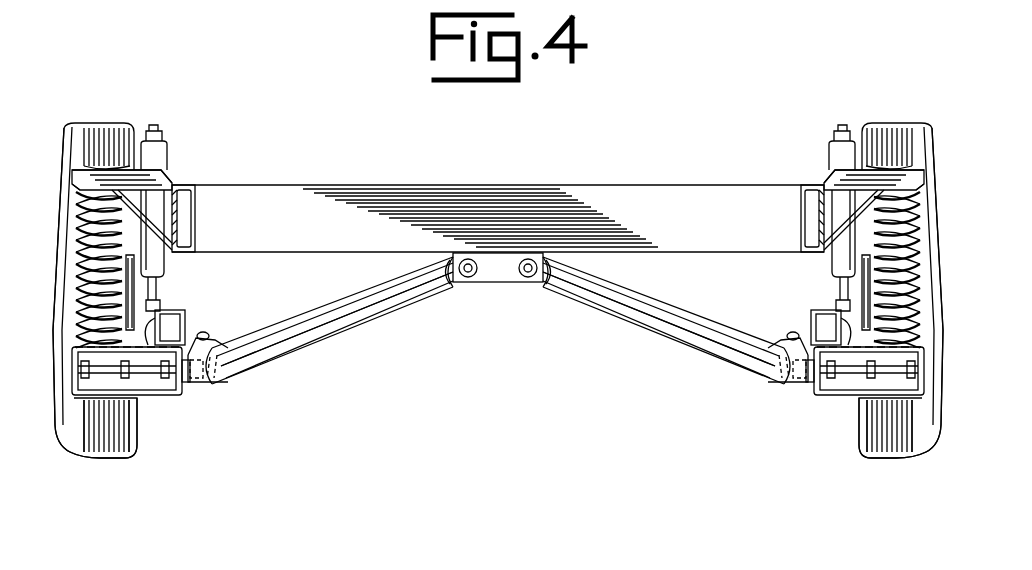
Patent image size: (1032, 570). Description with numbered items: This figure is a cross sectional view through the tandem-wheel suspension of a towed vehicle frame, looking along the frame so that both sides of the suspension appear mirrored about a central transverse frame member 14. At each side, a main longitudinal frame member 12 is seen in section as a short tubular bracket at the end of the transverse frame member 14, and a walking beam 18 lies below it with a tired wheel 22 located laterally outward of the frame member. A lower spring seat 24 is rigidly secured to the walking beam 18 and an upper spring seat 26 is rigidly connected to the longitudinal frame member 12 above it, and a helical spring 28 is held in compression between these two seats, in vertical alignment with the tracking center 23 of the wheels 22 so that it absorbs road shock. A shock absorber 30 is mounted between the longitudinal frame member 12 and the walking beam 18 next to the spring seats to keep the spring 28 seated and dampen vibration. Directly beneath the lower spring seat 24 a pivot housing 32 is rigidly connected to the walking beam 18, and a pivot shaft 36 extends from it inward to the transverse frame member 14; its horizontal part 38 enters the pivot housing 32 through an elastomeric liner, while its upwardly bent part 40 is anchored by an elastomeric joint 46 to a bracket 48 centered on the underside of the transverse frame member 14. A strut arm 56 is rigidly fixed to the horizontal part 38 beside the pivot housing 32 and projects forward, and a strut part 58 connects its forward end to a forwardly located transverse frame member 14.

The main longitudinal frame member 12 is at (196, 213).
The transverse frame member 14 is at (692, 186).
The walking beam 18 is at (180, 314).
The tired wheel 22 is at (142, 437).
The tracking center 23 is at (97, 460).
The lower spring seat 24 is at (125, 338).
The upper spring seat 26 is at (158, 184).
The helical spring 28 is at (78, 190).
The shock absorber 30 is at (170, 266).
The pivot housing 32 is at (158, 394).
The pivot shaft 36 is at (498, 324).
The horizontal part 38 is at (222, 378).
The upwardly bent part 40 is at (315, 338).
The elastomeric joint 46 is at (463, 283).
The bracket 48 is at (498, 283).
The strut arm 56 is at (213, 345).
The strut part 58 is at (327, 302).